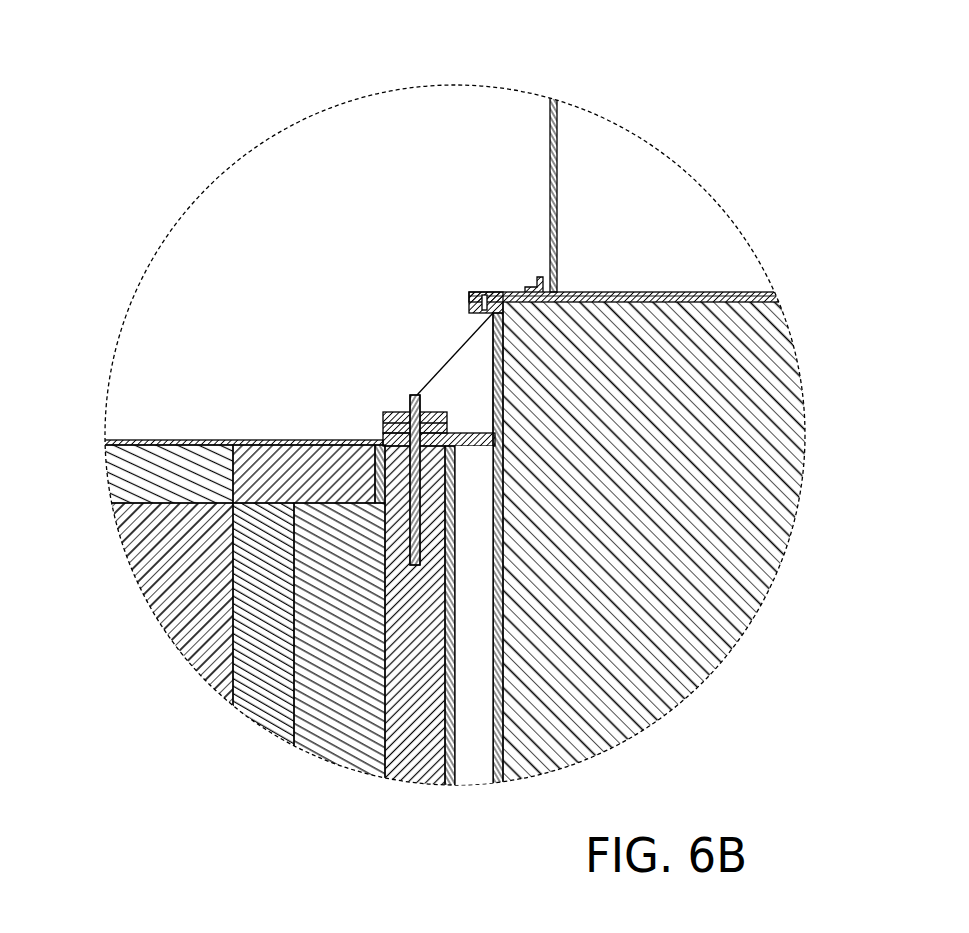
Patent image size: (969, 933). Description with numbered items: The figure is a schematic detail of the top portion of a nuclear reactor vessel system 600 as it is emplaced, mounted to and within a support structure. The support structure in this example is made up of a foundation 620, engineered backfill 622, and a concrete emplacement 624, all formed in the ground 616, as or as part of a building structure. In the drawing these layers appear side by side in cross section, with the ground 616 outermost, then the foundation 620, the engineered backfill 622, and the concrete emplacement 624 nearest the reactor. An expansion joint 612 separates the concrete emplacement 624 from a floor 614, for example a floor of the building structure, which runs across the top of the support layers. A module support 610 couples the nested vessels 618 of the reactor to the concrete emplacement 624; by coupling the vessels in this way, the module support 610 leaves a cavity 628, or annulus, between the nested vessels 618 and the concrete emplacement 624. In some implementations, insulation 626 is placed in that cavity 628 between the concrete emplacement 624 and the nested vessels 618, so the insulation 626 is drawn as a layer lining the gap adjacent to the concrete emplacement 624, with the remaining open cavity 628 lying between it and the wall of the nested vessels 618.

The nuclear reactor vessel system 600 is at (120, 55).
The module support 610 is at (447, 362).
The expansion joint 612 is at (377, 438).
The floor 614 is at (285, 438).
The ground 616 is at (200, 590).
The nested vessels 618 is at (777, 457).
The foundation 620 is at (263, 668).
The engineered backfill 622 is at (333, 708).
The concrete emplacement 624 is at (413, 738).
The insulation 626 is at (458, 764).
The cavity 628 is at (478, 734).